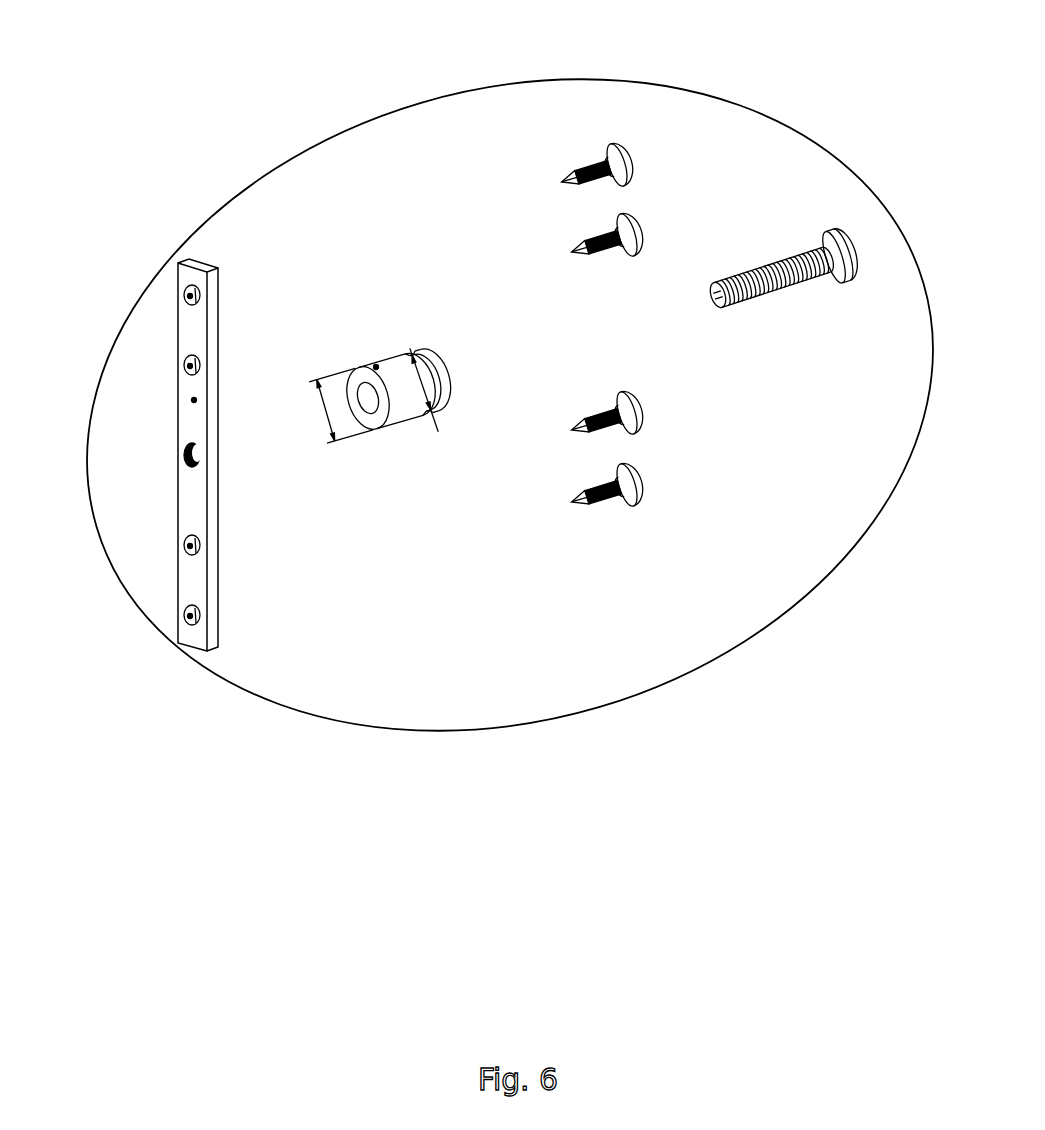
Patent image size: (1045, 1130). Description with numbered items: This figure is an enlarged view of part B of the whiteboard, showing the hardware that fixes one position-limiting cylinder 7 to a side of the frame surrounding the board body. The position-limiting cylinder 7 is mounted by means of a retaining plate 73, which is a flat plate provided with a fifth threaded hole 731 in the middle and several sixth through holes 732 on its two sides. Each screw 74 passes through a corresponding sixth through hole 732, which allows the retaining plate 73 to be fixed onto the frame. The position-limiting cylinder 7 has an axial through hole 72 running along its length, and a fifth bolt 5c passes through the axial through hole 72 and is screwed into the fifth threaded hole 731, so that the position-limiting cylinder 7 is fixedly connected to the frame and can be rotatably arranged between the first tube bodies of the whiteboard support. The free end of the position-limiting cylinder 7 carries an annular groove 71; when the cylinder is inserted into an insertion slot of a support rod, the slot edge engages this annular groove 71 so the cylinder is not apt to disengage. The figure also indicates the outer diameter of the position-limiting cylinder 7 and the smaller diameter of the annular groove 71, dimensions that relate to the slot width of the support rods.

The part B is at (862, 183).
The retaining plate 73 is at (194, 400).
The sixth through hole 732 is at (190, 366).
The fifth threaded hole 731 is at (186, 457).
The position-limiting cylinder 7 is at (376, 367).
The annular groove 71 is at (412, 352).
The axial through hole 72 is at (370, 405).
The screw 74 is at (585, 168).
The fifth bolt 5c is at (773, 270).